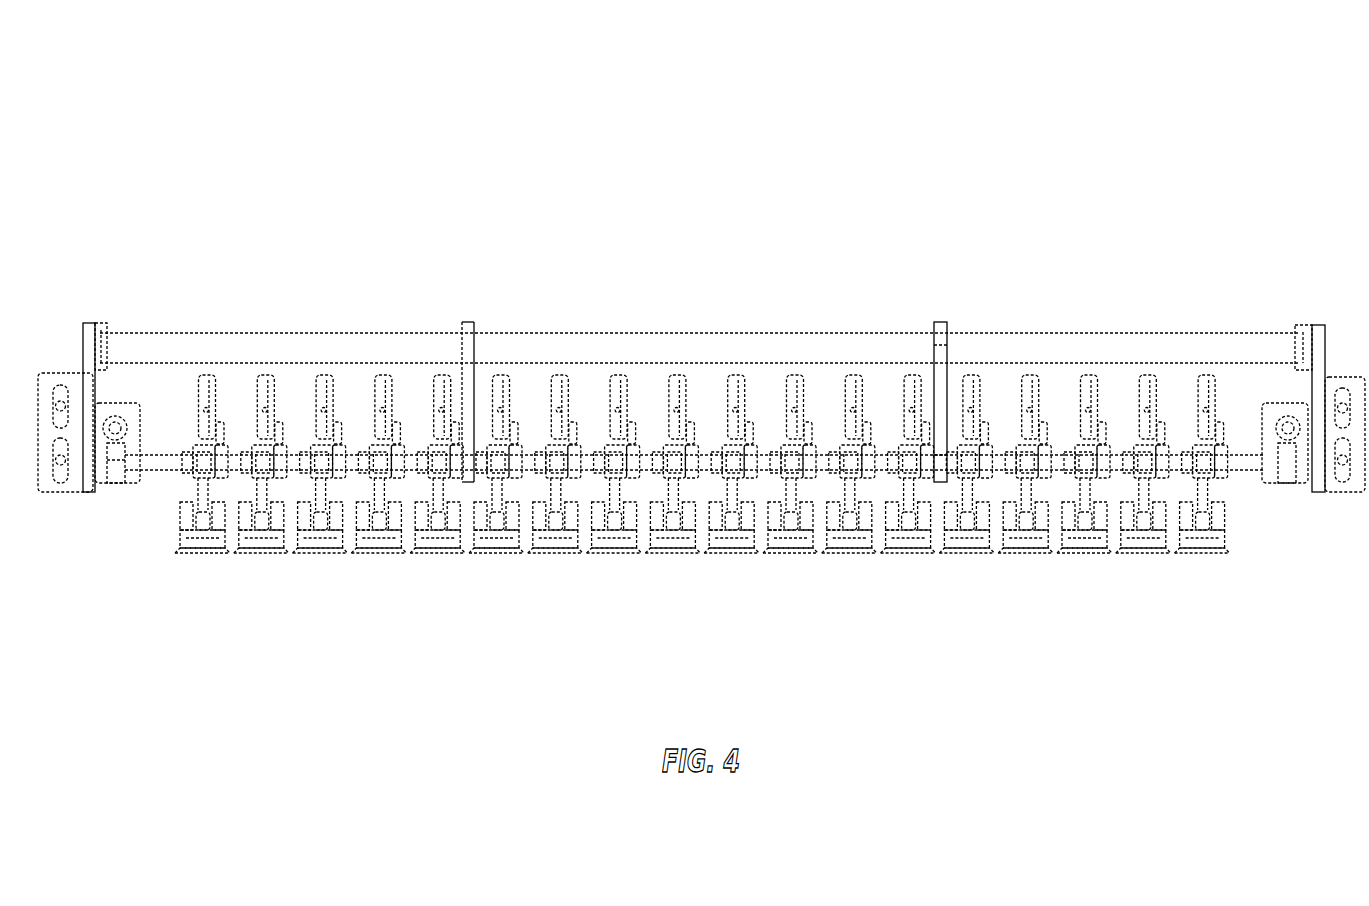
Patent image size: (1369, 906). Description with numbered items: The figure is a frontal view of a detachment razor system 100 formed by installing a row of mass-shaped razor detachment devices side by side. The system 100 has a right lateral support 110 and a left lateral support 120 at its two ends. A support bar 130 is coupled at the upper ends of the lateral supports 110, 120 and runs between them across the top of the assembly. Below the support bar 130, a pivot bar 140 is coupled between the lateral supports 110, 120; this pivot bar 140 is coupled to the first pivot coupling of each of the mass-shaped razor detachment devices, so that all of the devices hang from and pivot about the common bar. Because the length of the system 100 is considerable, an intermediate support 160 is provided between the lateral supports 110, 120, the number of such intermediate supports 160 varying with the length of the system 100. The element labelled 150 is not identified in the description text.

The detachment razor system 100 is at (310, 200).
The right lateral support 110 is at (1330, 350).
The left lateral support 120 is at (78, 352).
The support bar 130 is at (994, 312).
The pivot bar 140 is at (1243, 488).
The end hub 150 is at (121, 500).
The intermediate support 160 is at (470, 300).